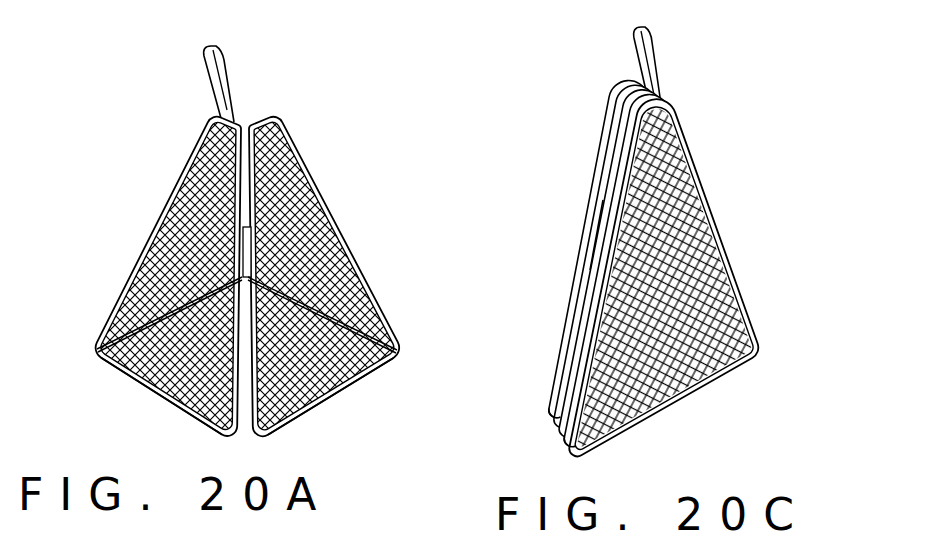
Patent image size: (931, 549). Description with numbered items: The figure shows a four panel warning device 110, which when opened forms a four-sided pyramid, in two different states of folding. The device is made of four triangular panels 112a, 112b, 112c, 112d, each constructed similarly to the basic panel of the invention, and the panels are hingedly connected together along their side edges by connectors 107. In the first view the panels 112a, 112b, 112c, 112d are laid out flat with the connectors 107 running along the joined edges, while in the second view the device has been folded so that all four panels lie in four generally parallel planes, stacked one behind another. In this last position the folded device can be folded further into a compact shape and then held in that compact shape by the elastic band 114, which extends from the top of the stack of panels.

In FIG. 20A, the four panel warning device 110 is at (255, 235).
In FIG. 20A, the elastic band 114 is at (224, 58).
In FIG. 20C, the elastic band 114 is at (660, 37).
In FIG. 20A, the connectors 107 is at (147, 250).
In FIG. 20A, the triangular panel 112a is at (387, 386).
In FIG. 20C, the triangular panel 112a is at (550, 428).
In FIG. 20A, the triangular panel 112b is at (330, 310).
In FIG. 20C, the triangular panel 112b is at (568, 455).
In FIG. 20A, the triangular panel 112c is at (190, 318).
In FIG. 20C, the triangular panel 112c is at (624, 88).
In FIG. 20A, the triangular panel 112d is at (158, 410).
In FIG. 20C, the triangular panel 112d is at (597, 208).